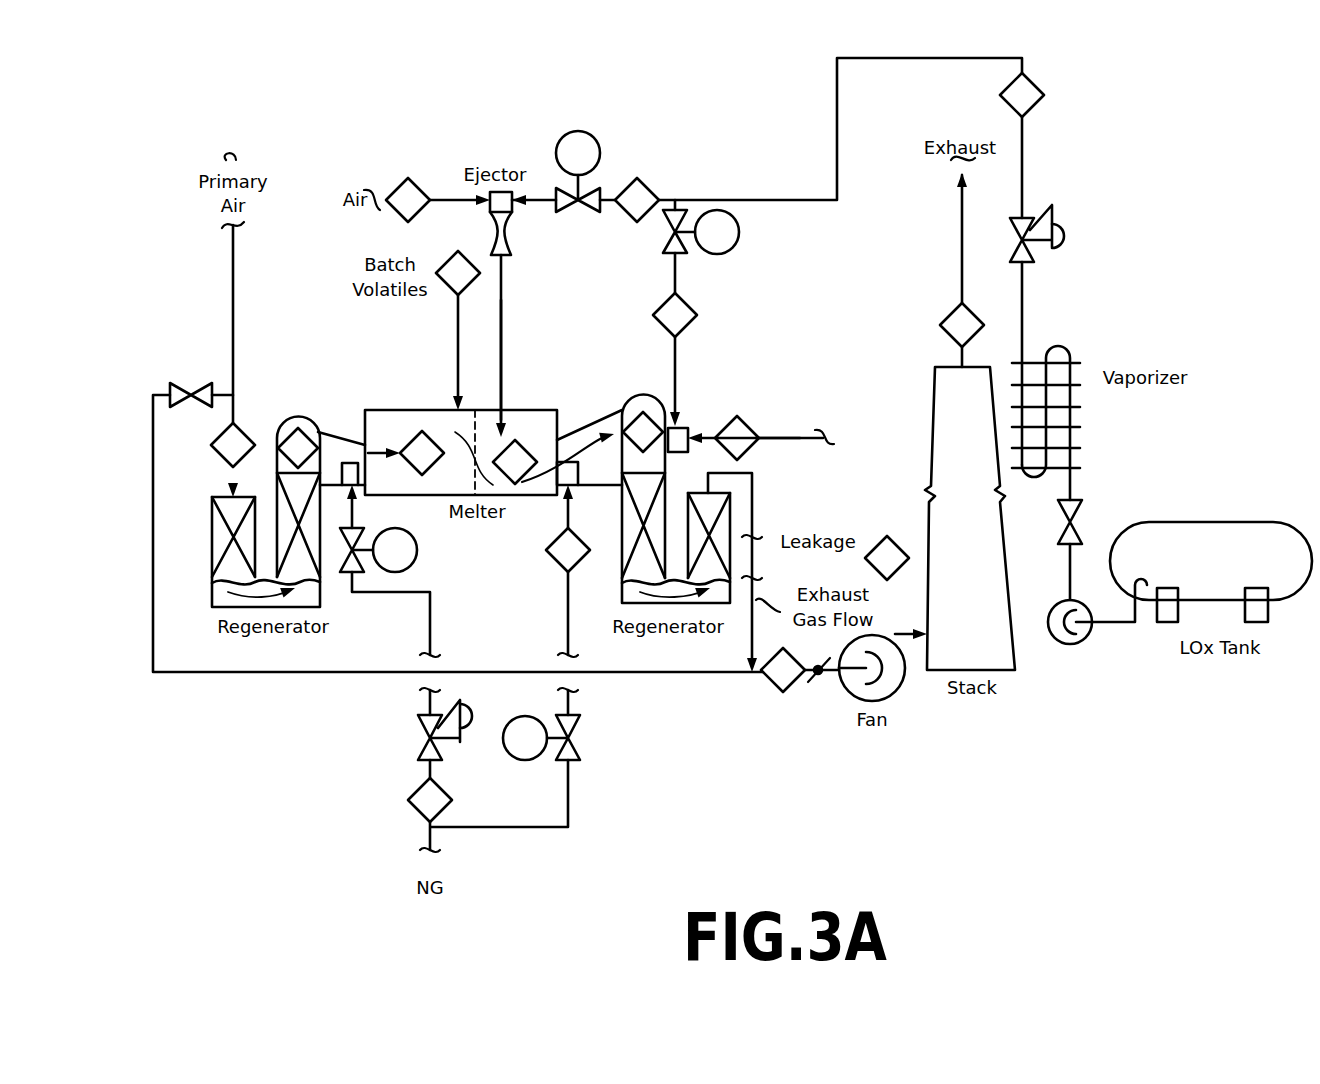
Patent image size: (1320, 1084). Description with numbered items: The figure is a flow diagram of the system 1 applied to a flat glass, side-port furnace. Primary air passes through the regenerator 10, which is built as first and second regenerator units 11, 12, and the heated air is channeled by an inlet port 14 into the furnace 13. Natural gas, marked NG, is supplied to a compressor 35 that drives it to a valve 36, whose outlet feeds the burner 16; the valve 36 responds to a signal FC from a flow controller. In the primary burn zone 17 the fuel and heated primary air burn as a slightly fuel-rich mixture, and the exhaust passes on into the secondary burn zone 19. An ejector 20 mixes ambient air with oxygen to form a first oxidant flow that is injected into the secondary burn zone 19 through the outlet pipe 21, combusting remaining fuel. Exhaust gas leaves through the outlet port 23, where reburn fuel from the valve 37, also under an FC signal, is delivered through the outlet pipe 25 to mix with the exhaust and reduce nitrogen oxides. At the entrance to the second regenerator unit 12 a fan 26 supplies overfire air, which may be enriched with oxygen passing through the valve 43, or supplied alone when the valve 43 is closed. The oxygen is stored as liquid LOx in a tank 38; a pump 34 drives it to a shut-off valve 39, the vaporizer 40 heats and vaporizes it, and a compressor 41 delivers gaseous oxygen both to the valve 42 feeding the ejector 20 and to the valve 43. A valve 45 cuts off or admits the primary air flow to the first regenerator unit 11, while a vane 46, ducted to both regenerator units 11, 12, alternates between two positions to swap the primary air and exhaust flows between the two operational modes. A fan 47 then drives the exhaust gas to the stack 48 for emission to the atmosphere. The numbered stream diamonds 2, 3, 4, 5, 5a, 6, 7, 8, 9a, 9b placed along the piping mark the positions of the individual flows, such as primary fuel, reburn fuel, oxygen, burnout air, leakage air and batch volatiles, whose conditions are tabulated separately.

The system 1 is at (296, 140).
The preheated combustion air stream 2 is at (298, 448).
The combustion air entering melter 3 is at (422, 453).
The exhaust gas leaving melter 4 is at (515, 462).
The exhaust gas to fan 5 is at (783, 670).
The exhaust gas entering regenerator 5a is at (643, 432).
The stack exhaust 6 is at (962, 325).
The natural gas fuel stream 7 is at (430, 800).
The fuel to melter 8 is at (568, 550).
The oxygen stream to ejector 9a is at (637, 200).
The air stream to ejector 9b is at (408, 200).
The regenerator 10 is at (675, 315).
The first regenerator unit 11 is at (296, 414).
The second regenerator unit 12 is at (650, 384).
The furnace 13 is at (395, 398).
The inlet port 14 is at (318, 432).
The burner 16 is at (350, 470).
The primary burn zone 17 is at (430, 420).
The secondary burn zone 19 is at (456, 432).
The ejector 20 is at (523, 232).
The outlet pipe 21 is at (515, 370).
The outlet port 23 is at (588, 410).
The outlet pipe 25 is at (594, 494).
The fan 26 is at (818, 434).
The pump 34 is at (1060, 662).
The compressor 35 is at (412, 740).
The valve 36 is at (386, 577).
The valve 37 is at (588, 741).
The tank 38 is at (1212, 514).
The shut-off valve 39 is at (1094, 513).
The vaporizer 40 is at (1094, 425).
The compressor 41 is at (1064, 210).
The valve 42 is at (604, 165).
The valve 43 is at (655, 232).
The valve 45 is at (192, 382).
The vane 46 is at (822, 696).
The fan 47 is at (914, 708).
The stack 48 is at (924, 400).